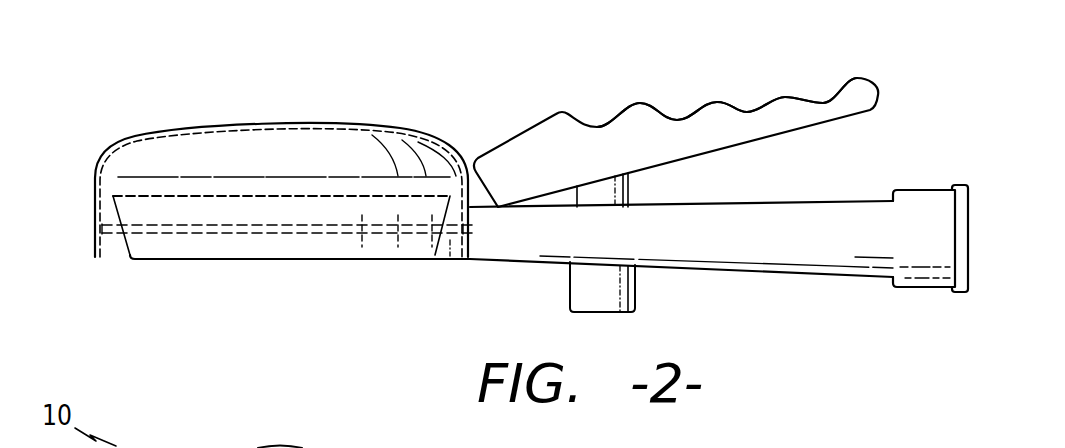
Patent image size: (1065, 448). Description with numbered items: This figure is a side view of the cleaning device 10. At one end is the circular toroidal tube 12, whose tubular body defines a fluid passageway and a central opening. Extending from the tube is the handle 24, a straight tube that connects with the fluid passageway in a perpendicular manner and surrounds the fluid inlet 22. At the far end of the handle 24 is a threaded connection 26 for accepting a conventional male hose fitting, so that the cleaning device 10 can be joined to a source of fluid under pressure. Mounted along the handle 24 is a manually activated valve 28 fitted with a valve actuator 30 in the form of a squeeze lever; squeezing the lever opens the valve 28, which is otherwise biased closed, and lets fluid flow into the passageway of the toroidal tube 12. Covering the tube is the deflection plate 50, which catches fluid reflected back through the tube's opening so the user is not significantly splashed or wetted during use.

The cleaning device 10 is at (212, 92).
The toroidal tube 12 is at (207, 262).
The fluid inlet 22 is at (978, 237).
The handle 24 is at (790, 273).
The threaded connection 26 is at (923, 190).
The manually activated valve 28 is at (532, 130).
The valve actuator 30 is at (708, 102).
The deflection plate 50 is at (142, 136).